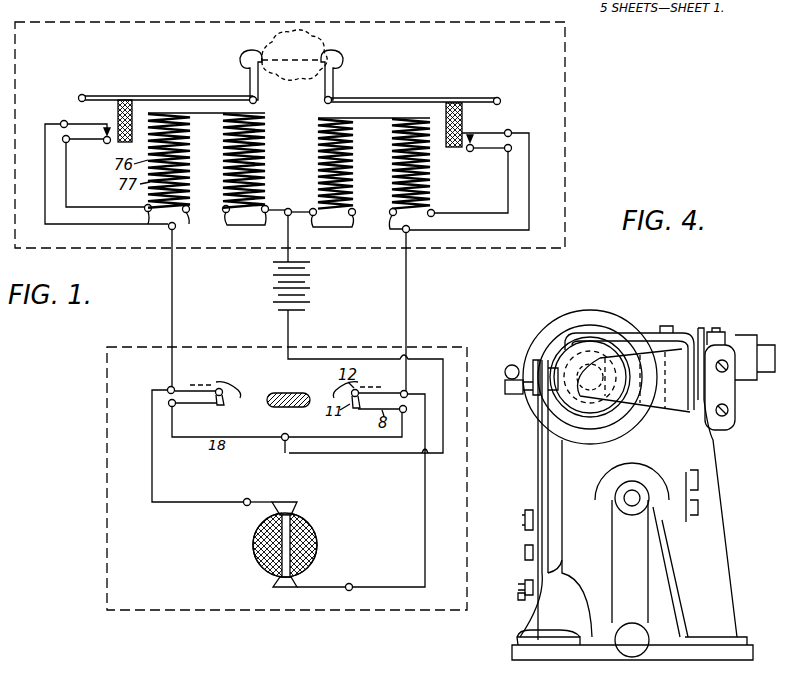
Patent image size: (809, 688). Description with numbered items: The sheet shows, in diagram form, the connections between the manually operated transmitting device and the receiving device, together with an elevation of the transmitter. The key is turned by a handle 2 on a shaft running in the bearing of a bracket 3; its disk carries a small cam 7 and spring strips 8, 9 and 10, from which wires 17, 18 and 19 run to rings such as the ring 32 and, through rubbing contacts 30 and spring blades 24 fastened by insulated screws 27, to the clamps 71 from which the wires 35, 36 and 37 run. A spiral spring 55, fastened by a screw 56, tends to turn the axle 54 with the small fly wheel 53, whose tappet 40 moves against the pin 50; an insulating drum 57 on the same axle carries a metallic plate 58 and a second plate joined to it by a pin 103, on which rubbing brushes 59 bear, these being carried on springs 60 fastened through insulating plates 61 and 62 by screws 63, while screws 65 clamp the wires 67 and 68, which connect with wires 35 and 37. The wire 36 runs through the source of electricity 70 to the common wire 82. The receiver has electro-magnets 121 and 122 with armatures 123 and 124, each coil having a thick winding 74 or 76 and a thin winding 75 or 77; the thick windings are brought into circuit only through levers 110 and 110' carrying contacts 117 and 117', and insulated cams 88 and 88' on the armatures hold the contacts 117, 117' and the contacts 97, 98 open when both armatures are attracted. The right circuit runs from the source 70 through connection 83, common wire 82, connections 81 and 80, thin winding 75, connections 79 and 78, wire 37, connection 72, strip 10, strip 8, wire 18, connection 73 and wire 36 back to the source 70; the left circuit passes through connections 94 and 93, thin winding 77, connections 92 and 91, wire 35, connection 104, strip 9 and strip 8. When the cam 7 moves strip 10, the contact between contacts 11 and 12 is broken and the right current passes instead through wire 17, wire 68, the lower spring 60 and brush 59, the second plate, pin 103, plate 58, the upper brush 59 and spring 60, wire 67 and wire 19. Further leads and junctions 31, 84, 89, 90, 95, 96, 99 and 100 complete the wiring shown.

In FIG. 4, the handle 2 is at (632, 560).
In FIG. 4, the bracket 3 is at (676, 612).
In FIG. 1, the small cam 7 is at (290, 393).
In FIG. 1, the spring strip 8 is at (184, 404).
In FIG. 1, the spring strip 9 is at (197, 385).
In FIG. 1, the spring strip 10 is at (382, 388).
In FIG. 1, the contact 11 is at (222, 404).
In FIG. 1, the contact 12 is at (222, 382).
In FIG. 1, the wire 17 is at (425, 542).
In FIG. 1, the wire 18 is at (287, 421).
In FIG. 1, the wire 19 is at (183, 446).
In FIG. 4, the spring blade 24 is at (700, 474).
In FIG. 4, the insulated screw 27 is at (716, 404).
In FIG. 4, the rubbing contact 30 is at (692, 522).
In FIG. 4, the ribs 31 is at (698, 508).
In FIG. 4, the ring 32 is at (664, 516).
In FIG. 1, the wire 35 is at (172, 320).
In FIG. 4, the wire 35 is at (706, 330).
In FIG. 1, the wire 36 is at (290, 334).
In FIG. 1, the wire 37 is at (407, 328).
In FIG. 4, the small cam or tappet 40 is at (522, 394).
In FIG. 4, the pin 50 is at (513, 364).
In FIG. 4, the small fly wheel 53 is at (596, 310).
In FIG. 4, the axle 54 is at (625, 313).
In FIG. 4, the spiral spring 55 is at (646, 330).
In FIG. 4, the screw 56 is at (670, 328).
In FIG. 1, the drum 57 is at (318, 540).
In FIG. 4, the drum 57 is at (634, 496).
In FIG. 1, the metallic plate or segment 58 is at (245, 522).
In FIG. 4, the metallic plate or segment 58 is at (590, 357).
In FIG. 1, the rubbing contact brush 59 is at (316, 504).
In FIG. 4, the rubbing contact brush 59 is at (572, 360).
In FIG. 1, the spring 60 is at (283, 493).
In FIG. 4, the spring 60 is at (514, 500).
In FIG. 4, the insulating plate 61 is at (553, 522).
In FIG. 4, the insulating plate 62 is at (523, 512).
In FIG. 4, the screw 63 is at (523, 550).
In FIG. 4, the screw 65 is at (522, 588).
In FIG. 1, the wire 67 is at (245, 500).
In FIG. 4, the wire 67 is at (520, 600).
In FIG. 1, the wire 68 is at (325, 599).
In FIG. 1, the source of electricity 70 is at (307, 290).
In FIG. 4, the clamp 71 is at (727, 336).
In FIG. 1, the circuit connection 72 is at (408, 392).
In FIG. 1, the circuit connection 73 is at (281, 433).
In FIG. 1, the thick winding 74 is at (353, 148).
In FIG. 1, the thin winding 75 is at (392, 190).
In FIG. 1, the thick winding 76 is at (266, 165).
In FIG. 1, the thin winding 77 is at (266, 140).
In FIG. 1, the circuit connection 78 is at (410, 230).
In FIG. 1, the circuit connection 79 is at (390, 232).
In FIG. 1, the circuit connection 80 is at (349, 232).
In FIG. 1, the circuit connection 81 is at (323, 230).
In FIG. 1, the common wire 82 is at (288, 208).
In FIG. 1, the circuit connection 83 is at (305, 233).
In FIG. 1, the conductor 84 is at (529, 196).
In FIG. 1, the cam or arm 88 is at (133, 106).
In FIG. 1, the insulating block 88' is at (465, 107).
In FIG. 1, the conductor 89 is at (508, 203).
In FIG. 1, the terminal 90 is at (435, 214).
In FIG. 1, the circuit connection 91 is at (168, 228).
In FIG. 1, the circuit connection 92 is at (189, 229).
In FIG. 1, the circuit connection 93 is at (239, 228).
In FIG. 1, the circuit connection 94 is at (267, 228).
In FIG. 1, the conductor 95 is at (45, 193).
In FIG. 1, the terminal 96 is at (63, 120).
In FIG. 1, the contact 97 is at (106, 126).
In FIG. 1, the contact 98 is at (96, 144).
In FIG. 1, the conductor 99 is at (66, 200).
In FIG. 1, the terminal 100 is at (145, 212).
In FIG. 1, the pin 103 is at (266, 552).
In FIG. 1, the circuit connection 104 is at (168, 386).
In FIG. 1, the lever 110 is at (524, 122).
In FIG. 1, the lever 110' is at (489, 169).
In FIG. 1, the contact 117 is at (483, 129).
In FIG. 1, the contact 117' is at (480, 161).
In FIG. 1, the electro-magnet 121 is at (190, 130).
In FIG. 1, the electro-magnet 122 is at (352, 164).
In FIG. 1, the armature 123 is at (205, 88).
In FIG. 1, the armature 124 is at (392, 98).